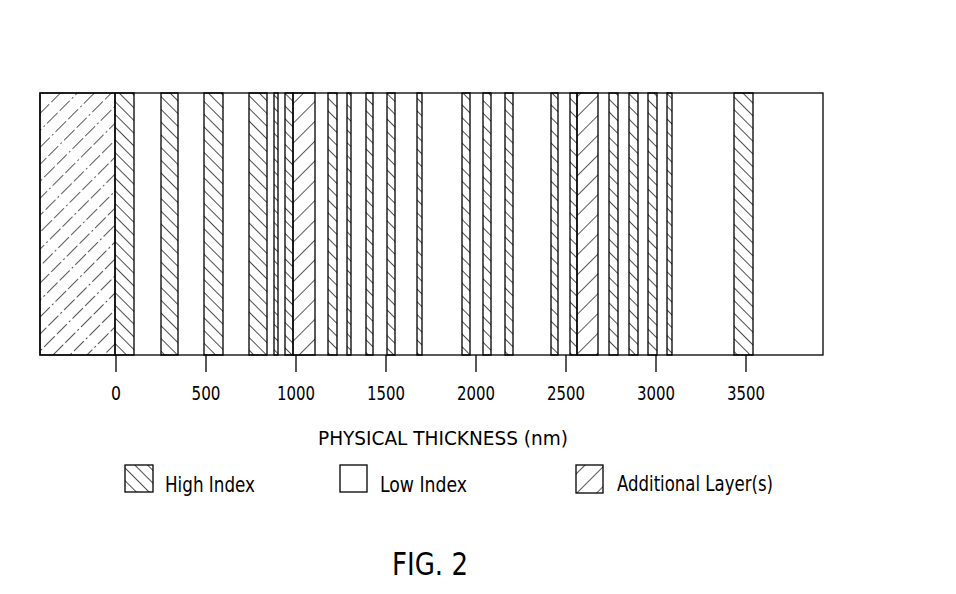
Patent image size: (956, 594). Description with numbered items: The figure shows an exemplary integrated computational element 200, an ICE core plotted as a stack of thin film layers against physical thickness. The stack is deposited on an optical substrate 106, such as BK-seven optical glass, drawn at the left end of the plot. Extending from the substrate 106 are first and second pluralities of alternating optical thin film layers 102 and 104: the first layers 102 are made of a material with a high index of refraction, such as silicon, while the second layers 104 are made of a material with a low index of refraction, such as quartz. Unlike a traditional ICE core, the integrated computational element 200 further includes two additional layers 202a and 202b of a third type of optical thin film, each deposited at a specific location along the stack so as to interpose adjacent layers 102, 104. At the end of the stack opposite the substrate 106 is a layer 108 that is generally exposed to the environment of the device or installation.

The integrated computational element 200 is at (718, 71).
The optical substrate 106 is at (84, 93).
The first layers 102 is at (130, 93).
The additional layer 202a is at (303, 93).
The second layers 104 is at (527, 93).
The additional layer 202b is at (588, 93).
The layer 108 is at (753, 113).